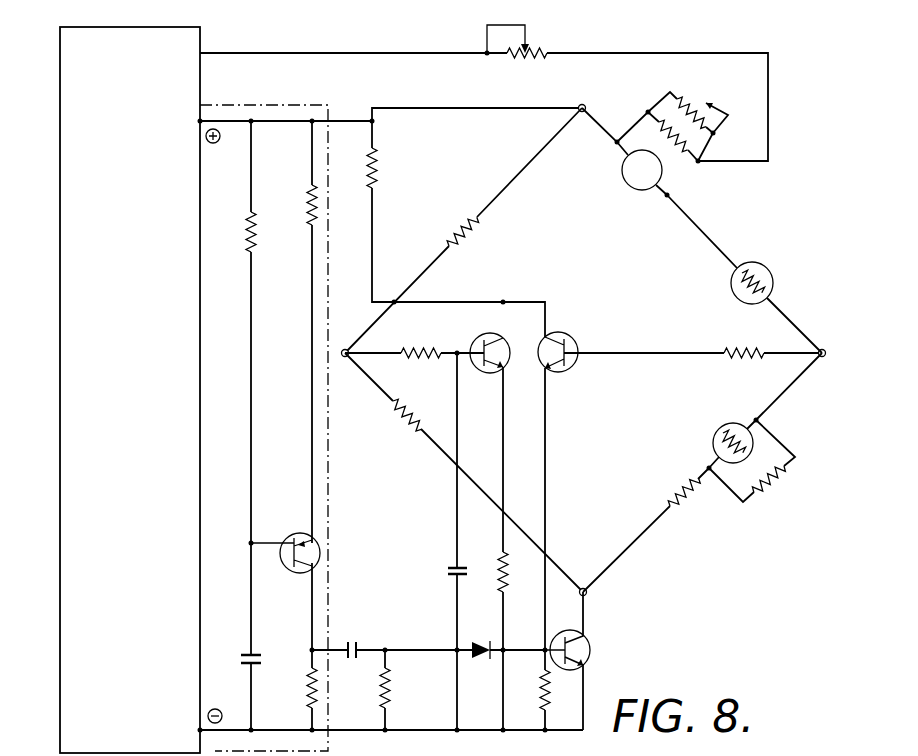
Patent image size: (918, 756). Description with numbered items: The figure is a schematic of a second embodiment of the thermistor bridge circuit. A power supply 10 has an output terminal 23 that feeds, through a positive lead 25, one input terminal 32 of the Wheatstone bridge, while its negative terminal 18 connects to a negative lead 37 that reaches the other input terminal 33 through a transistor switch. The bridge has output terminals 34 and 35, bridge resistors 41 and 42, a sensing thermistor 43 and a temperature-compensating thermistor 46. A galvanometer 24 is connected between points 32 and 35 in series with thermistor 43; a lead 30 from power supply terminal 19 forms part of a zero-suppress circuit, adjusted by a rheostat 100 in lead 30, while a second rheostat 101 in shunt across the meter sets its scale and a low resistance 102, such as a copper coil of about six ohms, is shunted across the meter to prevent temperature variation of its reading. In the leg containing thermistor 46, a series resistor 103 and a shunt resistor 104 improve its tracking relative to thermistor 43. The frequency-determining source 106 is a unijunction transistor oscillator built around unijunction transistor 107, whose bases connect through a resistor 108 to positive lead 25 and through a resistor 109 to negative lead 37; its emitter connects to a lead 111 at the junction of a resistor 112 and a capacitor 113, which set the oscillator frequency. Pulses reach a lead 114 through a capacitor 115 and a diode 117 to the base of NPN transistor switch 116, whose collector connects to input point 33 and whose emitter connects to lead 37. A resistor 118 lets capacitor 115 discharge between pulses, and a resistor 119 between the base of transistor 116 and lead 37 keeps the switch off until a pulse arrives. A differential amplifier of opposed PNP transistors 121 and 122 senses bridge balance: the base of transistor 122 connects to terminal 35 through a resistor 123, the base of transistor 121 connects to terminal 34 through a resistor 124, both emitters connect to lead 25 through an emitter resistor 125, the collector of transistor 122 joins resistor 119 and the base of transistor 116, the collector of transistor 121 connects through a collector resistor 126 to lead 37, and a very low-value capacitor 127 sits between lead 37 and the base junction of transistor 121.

The power supply 10 is at (60, 272).
The negative terminal 18 is at (199, 730).
The power supply terminal 19 is at (202, 53).
The output terminal 23 is at (198, 122).
The galvanometer 24 is at (620, 181).
The positive lead 25 is at (348, 116).
The lead 30 is at (328, 53).
The input terminal 32 is at (587, 106).
The input terminal 33 is at (588, 597).
The output terminal 34 is at (344, 358).
The output terminal 35 is at (824, 353).
The negative lead 37 is at (408, 732).
The bridge resistor 41 is at (476, 230).
The bridge resistor 42 is at (414, 412).
The sensing thermistor 43 is at (772, 276).
The temperature-compensating thermistor 46 is at (714, 428).
The rheostat 100 is at (536, 50).
The second rheostat 101 is at (686, 98).
The low resistance 102 is at (667, 129).
The series resistor 103 is at (686, 500).
The shunt resistor 104 is at (782, 482).
The frequency-determining source 106 is at (332, 488).
The unijunction transistor 107 is at (290, 575).
The resistor 108 is at (307, 207).
The resistor 109 is at (307, 690).
The lead 111 is at (251, 468).
The resistor 112 is at (256, 250).
The capacitor 113 is at (243, 653).
The lead 114 is at (432, 650).
The capacitor 115 is at (351, 640).
The transistor switch 116 is at (598, 652).
The diode 117 is at (480, 660).
The resistor 118 is at (391, 690).
The resistor 119 is at (542, 700).
The PNP transistor 121 is at (472, 340).
The PNP transistor 122 is at (580, 338).
The resistor 123 is at (734, 352).
The resistor 124 is at (422, 364).
The emitter resistor 125 is at (380, 162).
The collector resistor 126 is at (503, 588).
The capacitor 127 is at (446, 572).